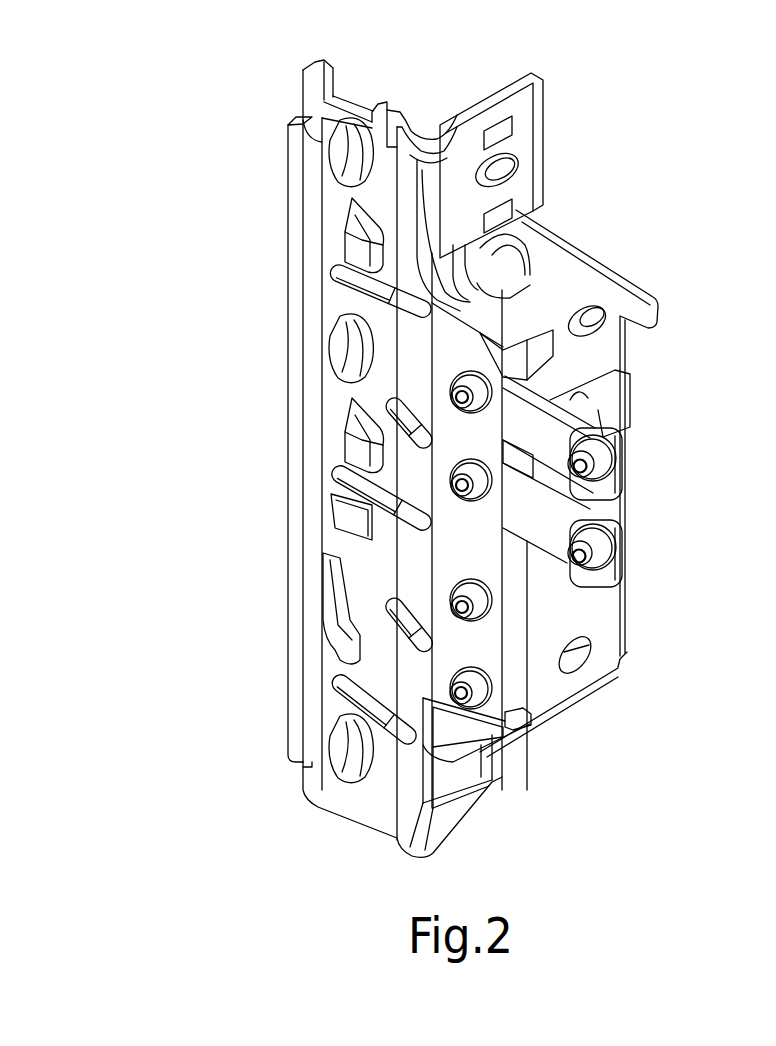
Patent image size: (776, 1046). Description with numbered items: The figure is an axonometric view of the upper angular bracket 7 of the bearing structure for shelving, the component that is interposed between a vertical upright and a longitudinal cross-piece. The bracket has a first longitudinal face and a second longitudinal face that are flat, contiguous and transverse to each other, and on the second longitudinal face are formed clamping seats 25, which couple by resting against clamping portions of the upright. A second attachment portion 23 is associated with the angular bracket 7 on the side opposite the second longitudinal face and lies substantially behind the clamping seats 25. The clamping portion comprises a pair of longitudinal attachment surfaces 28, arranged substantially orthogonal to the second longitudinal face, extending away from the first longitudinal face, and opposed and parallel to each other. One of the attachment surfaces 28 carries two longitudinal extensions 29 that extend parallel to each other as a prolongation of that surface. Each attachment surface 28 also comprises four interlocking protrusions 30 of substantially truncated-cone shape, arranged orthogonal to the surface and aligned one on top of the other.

The angular bracket 7 is at (168, 86).
The second attachment portion 23 is at (553, 692).
The clamping seats 25 is at (530, 272).
The longitudinal attachment surfaces 28 is at (460, 537).
The longitudinal extensions 29 is at (623, 465).
The interlocking protrusions 30 is at (583, 452).